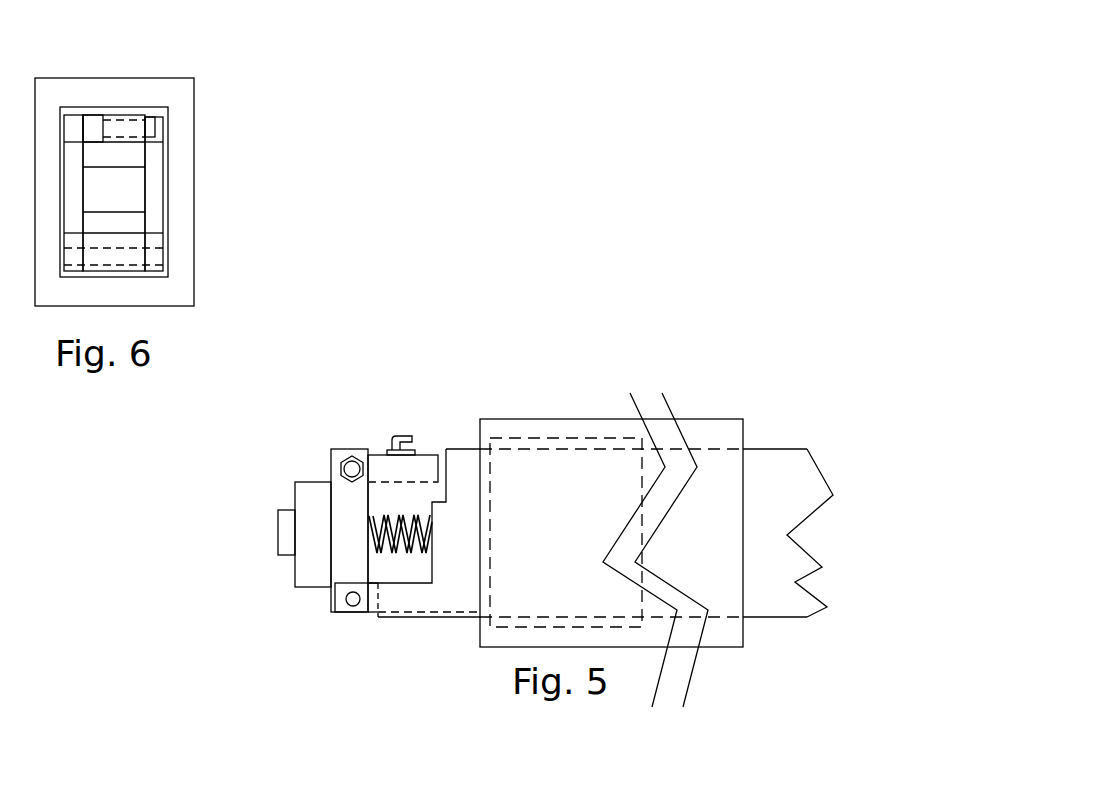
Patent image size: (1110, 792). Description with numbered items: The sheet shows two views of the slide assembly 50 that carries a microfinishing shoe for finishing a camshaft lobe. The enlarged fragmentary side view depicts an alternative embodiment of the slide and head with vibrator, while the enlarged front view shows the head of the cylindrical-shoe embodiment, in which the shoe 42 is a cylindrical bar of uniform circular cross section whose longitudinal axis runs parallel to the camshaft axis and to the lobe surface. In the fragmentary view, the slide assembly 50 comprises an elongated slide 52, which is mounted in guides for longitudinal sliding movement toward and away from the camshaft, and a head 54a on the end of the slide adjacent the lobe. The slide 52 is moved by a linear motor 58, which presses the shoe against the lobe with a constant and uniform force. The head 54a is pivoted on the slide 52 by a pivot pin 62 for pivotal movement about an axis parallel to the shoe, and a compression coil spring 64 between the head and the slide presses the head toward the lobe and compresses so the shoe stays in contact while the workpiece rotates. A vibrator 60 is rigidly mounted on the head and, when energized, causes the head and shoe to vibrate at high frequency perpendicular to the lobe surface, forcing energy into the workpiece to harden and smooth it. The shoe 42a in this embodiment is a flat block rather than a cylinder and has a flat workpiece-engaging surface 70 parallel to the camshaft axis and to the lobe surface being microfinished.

In FIG. 6, the slide assembly 50 is at (214, 90).
In FIG. 5, the slide assembly 50 is at (627, 353).
In FIG. 6, the microfinishing shoe 42 is at (122, 184).
In FIG. 5, the shoe 42a is at (278, 542).
In FIG. 5, the slide 52 is at (776, 470).
In FIG. 5, the head 54a is at (313, 570).
In FIG. 5, the linear motor 58 is at (530, 435).
In FIG. 5, the vibrator 60 is at (417, 455).
In FIG. 6, the pivot pin 62 is at (168, 257).
In FIG. 5, the pivot pin 62 is at (349, 606).
In FIG. 5, the compression coil spring 64 is at (388, 518).
In FIG. 5, the workpiece-engaging surface 70 is at (278, 523).